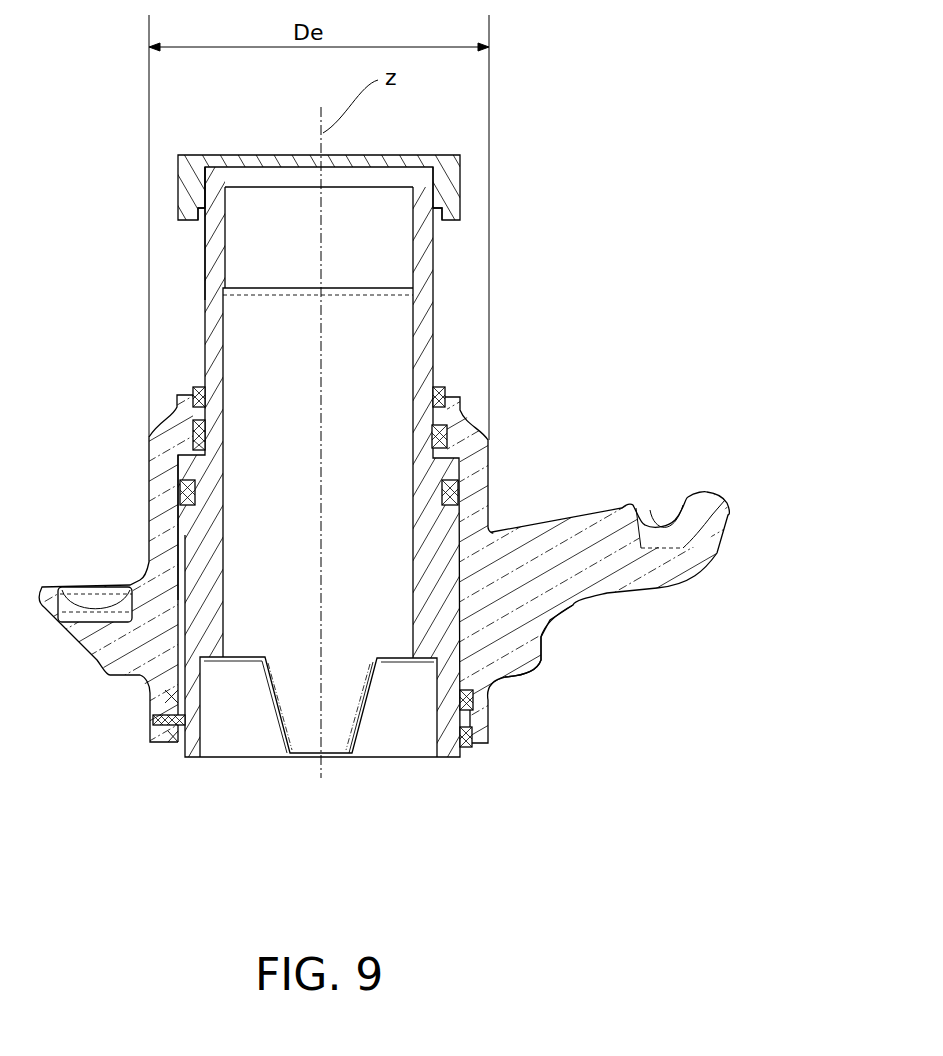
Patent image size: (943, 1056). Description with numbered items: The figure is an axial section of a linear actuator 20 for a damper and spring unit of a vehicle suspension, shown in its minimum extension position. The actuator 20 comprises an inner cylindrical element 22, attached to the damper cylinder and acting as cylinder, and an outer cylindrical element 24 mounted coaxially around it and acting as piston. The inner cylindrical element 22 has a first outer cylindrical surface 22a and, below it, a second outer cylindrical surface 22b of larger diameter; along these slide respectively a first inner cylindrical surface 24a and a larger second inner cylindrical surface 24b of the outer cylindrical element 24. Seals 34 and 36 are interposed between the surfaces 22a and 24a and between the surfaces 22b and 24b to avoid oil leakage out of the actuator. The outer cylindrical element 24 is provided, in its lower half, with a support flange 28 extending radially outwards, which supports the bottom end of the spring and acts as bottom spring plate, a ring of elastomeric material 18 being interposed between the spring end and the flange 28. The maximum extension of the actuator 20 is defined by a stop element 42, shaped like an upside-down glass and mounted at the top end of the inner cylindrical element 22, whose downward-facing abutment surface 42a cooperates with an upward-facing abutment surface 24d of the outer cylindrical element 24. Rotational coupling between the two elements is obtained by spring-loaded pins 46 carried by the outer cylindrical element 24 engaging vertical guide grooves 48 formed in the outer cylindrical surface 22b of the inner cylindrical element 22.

The ring of elastomeric material 18 is at (673, 527).
The actuator 20 is at (190, 340).
The inner cylindrical element 22 is at (433, 340).
The first outer cylindrical surface 22a is at (203, 263).
The second outer cylindrical surface 22b is at (177, 525).
The outer cylindrical element 24 is at (490, 497).
The first inner cylindrical surface 24a is at (197, 445).
The second inner cylindrical surface 24b is at (188, 533).
The abutment surface 24d is at (440, 395).
The support flange 28 is at (613, 597).
The seal 34 is at (432, 440).
The seal 36 is at (442, 496).
The stop element 42 is at (462, 195).
The abutment surface 42a is at (443, 223).
The spring-loaded pin 46 is at (187, 718).
The vertical guide groove 48 is at (183, 640).